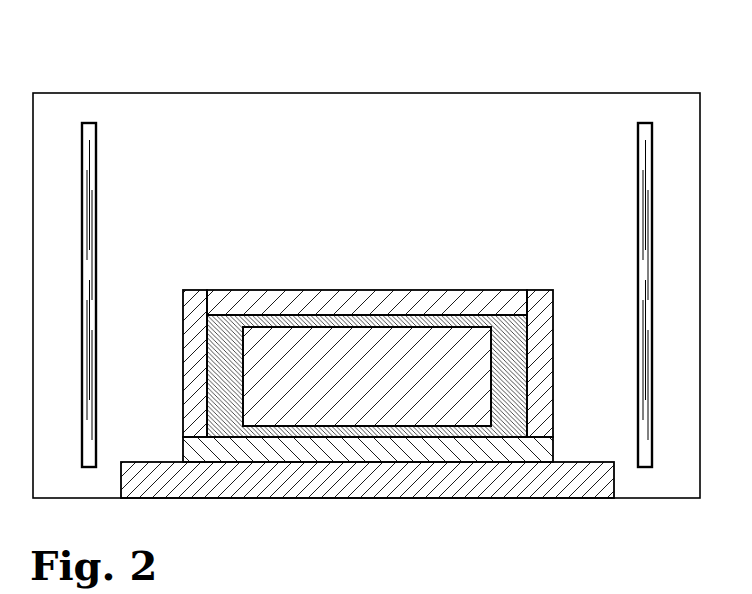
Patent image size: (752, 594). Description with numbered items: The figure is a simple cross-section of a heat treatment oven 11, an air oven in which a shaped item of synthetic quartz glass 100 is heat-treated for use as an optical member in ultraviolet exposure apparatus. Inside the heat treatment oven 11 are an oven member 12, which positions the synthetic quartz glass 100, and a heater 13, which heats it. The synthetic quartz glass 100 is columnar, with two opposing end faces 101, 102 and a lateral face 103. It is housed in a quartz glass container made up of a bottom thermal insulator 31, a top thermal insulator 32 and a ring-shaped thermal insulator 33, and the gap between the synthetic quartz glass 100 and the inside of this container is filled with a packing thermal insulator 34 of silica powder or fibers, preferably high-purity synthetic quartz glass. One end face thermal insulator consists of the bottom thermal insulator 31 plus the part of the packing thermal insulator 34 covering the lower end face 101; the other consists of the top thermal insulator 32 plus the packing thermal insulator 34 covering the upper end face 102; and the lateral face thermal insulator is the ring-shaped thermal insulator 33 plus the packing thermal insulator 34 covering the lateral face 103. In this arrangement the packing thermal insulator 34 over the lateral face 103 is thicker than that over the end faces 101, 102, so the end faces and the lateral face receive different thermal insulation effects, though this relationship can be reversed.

The heat treatment oven 11 is at (333, 89).
The oven member 12 is at (162, 470).
The heater 13 is at (97, 153).
The bottom thermal insulator 31 is at (538, 450).
The top thermal insulator 32 is at (293, 305).
The ring-shaped thermal insulator 33 is at (194, 297).
The packing thermal insulator 34 is at (220, 338).
The synthetic quartz glass 100 is at (342, 328).
The end face 101 is at (379, 434).
The end face 102 is at (423, 318).
The lateral face 103 is at (499, 367).